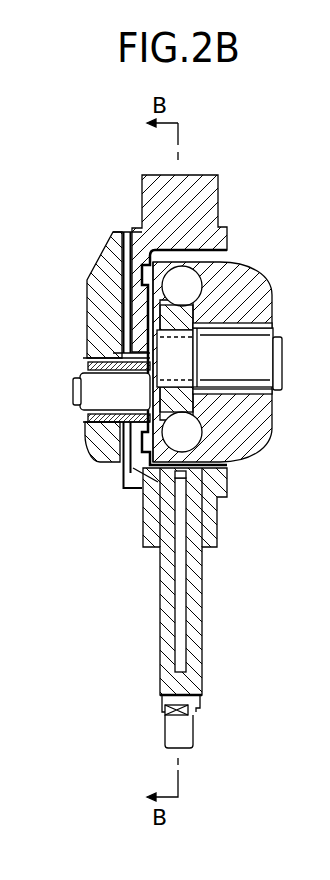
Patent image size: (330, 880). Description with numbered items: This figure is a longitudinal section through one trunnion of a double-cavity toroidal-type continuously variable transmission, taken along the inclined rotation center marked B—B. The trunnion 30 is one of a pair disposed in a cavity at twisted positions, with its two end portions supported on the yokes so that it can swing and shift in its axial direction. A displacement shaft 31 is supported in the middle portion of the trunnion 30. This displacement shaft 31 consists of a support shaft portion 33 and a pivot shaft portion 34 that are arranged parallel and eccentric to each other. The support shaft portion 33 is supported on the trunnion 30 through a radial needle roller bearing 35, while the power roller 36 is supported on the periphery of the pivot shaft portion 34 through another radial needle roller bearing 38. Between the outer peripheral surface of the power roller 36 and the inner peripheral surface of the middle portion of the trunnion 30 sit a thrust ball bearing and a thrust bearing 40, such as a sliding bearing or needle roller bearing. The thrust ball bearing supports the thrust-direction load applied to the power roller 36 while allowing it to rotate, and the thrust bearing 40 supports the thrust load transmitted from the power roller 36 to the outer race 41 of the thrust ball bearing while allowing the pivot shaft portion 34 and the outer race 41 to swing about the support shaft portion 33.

The trunnion 30 is at (104, 283).
The displacement shaft 31 is at (181, 357).
The support shaft portion 33 is at (103, 392).
The pivot shaft portion 34 is at (237, 360).
The radial needle roller bearing 35 is at (120, 478).
The power roller 36 is at (230, 283).
The radial needle roller bearing 38 is at (227, 392).
The thrust bearing 40 is at (133, 285).
The outer race 41 is at (168, 260).